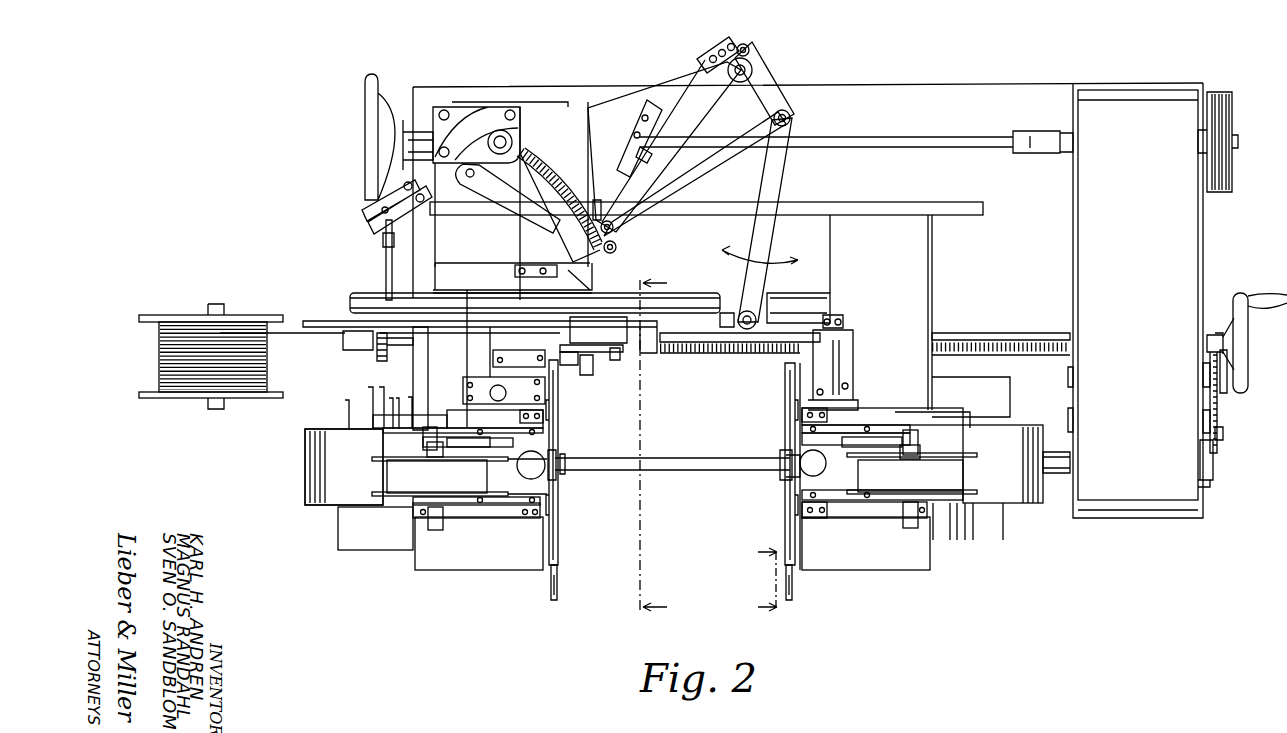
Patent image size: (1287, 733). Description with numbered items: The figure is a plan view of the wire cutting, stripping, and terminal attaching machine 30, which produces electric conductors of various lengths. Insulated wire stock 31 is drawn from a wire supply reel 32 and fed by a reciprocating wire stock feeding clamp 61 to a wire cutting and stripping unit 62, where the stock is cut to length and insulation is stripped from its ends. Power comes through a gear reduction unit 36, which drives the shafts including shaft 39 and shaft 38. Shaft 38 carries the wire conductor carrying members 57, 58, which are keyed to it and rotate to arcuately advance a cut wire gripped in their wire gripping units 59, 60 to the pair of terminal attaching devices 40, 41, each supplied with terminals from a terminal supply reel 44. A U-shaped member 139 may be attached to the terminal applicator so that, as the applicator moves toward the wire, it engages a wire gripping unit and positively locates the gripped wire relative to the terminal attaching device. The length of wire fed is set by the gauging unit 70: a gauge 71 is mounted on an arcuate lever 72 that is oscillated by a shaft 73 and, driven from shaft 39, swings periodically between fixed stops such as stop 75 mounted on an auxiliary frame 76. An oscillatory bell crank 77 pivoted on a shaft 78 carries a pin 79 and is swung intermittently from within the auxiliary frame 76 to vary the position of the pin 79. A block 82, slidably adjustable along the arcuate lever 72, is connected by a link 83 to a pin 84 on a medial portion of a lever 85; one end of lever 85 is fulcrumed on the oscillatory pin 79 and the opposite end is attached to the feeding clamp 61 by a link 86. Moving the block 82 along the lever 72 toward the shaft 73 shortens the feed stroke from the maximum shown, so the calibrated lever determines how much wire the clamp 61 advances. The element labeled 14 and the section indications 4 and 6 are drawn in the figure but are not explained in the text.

The wire cutting, stripping, and terminal attaching machine 30 is at (935, 105).
The gear reduction unit 36 is at (1175, 270).
The shaft 39 is at (960, 148).
The shaft 73 is at (508, 140).
The arcuate lever 72 is at (512, 188).
The gauge 71 is at (552, 222).
The fixed stop 75 is at (558, 252).
The auxiliary frame 76 is at (592, 265).
The rack 14 is at (616, 165).
The gauging unit 70 is at (612, 106).
The oscillatory bell crank 77 is at (728, 20).
The pivot shaft 78 is at (728, 82).
The pin 79 is at (750, 50).
The pin 84 is at (791, 116).
The lever 85 is at (777, 182).
The link 83 is at (712, 165).
The block 82 is at (617, 243).
The link 86 is at (728, 305).
The wire supply reel 32 is at (222, 318).
The insulated wire stock 31 is at (638, 352).
The wire stock feeding clamp 61 is at (612, 352).
The wire cutting and stripping unit 62 is at (582, 362).
The terminal supply reel 44 is at (998, 495).
The terminal attaching device 40 is at (541, 463).
The terminal attaching device 41 is at (803, 452).
The shaft 38 is at (705, 468).
The U-shaped member 139 is at (780, 480).
The wire conductor carrying member 57 is at (560, 518).
The wire conductor carrying member 58 is at (783, 513).
The wire gripping unit 59 is at (559, 596).
The wire gripping unit 60 is at (784, 594).
The section line 4- 4 is at (653, 449).
The section line 6- 6 is at (757, 579).